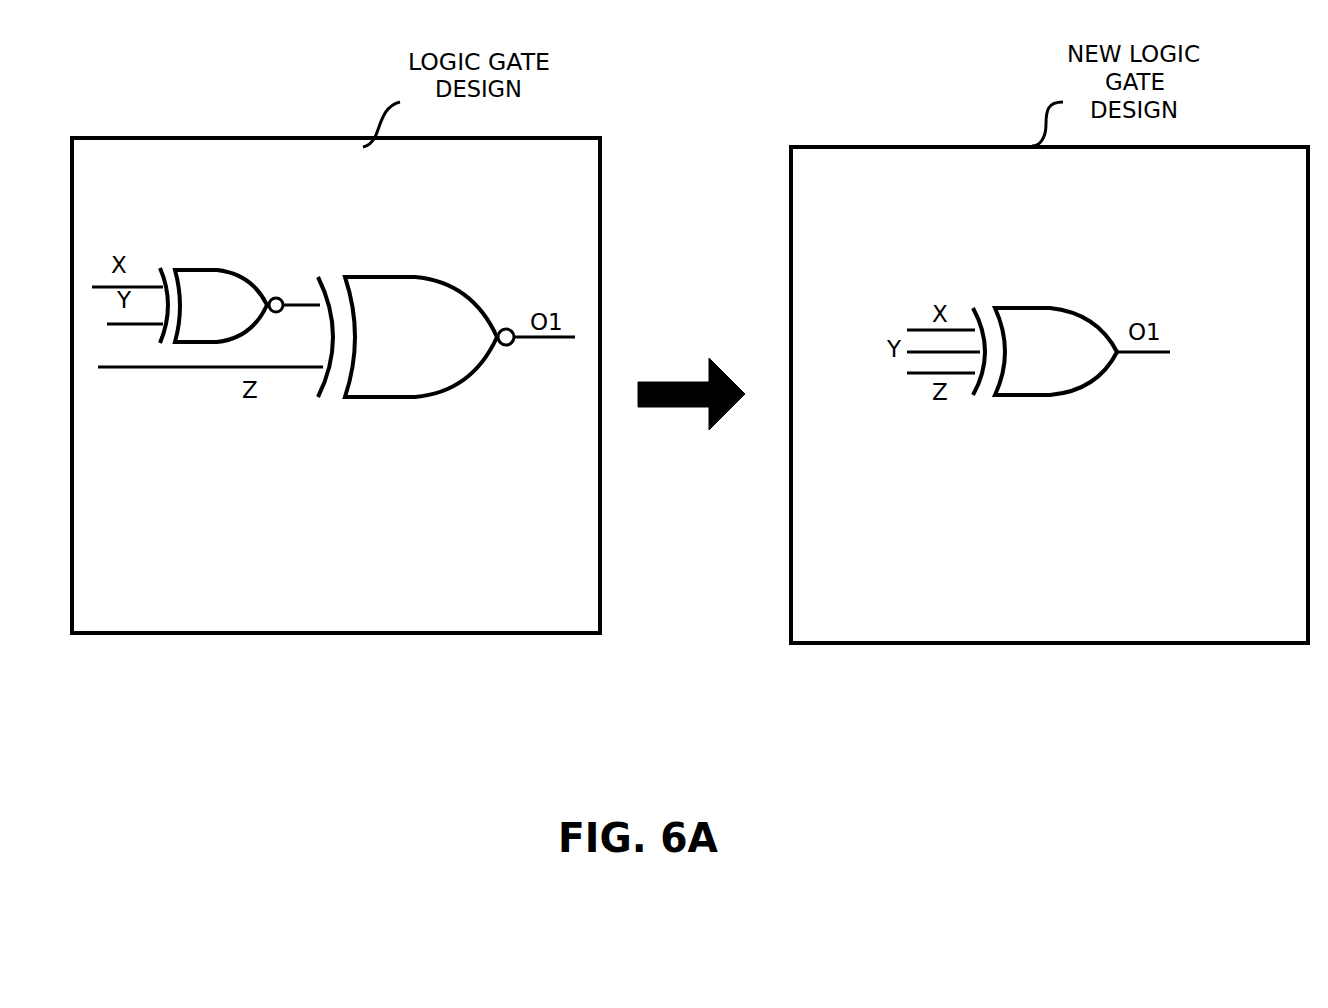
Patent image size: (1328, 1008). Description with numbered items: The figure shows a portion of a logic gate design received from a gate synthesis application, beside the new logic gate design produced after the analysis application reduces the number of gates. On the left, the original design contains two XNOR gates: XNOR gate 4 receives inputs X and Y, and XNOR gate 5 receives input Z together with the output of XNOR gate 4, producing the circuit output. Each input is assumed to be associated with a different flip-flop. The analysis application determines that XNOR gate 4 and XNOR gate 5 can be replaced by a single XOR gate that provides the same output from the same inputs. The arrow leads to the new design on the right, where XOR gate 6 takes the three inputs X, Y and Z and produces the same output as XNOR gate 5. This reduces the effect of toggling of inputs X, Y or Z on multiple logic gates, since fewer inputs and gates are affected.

The XNOR gate 4 is at (217, 268).
The XNOR gate 5 is at (410, 397).
The XOR gate 6 is at (1045, 395).